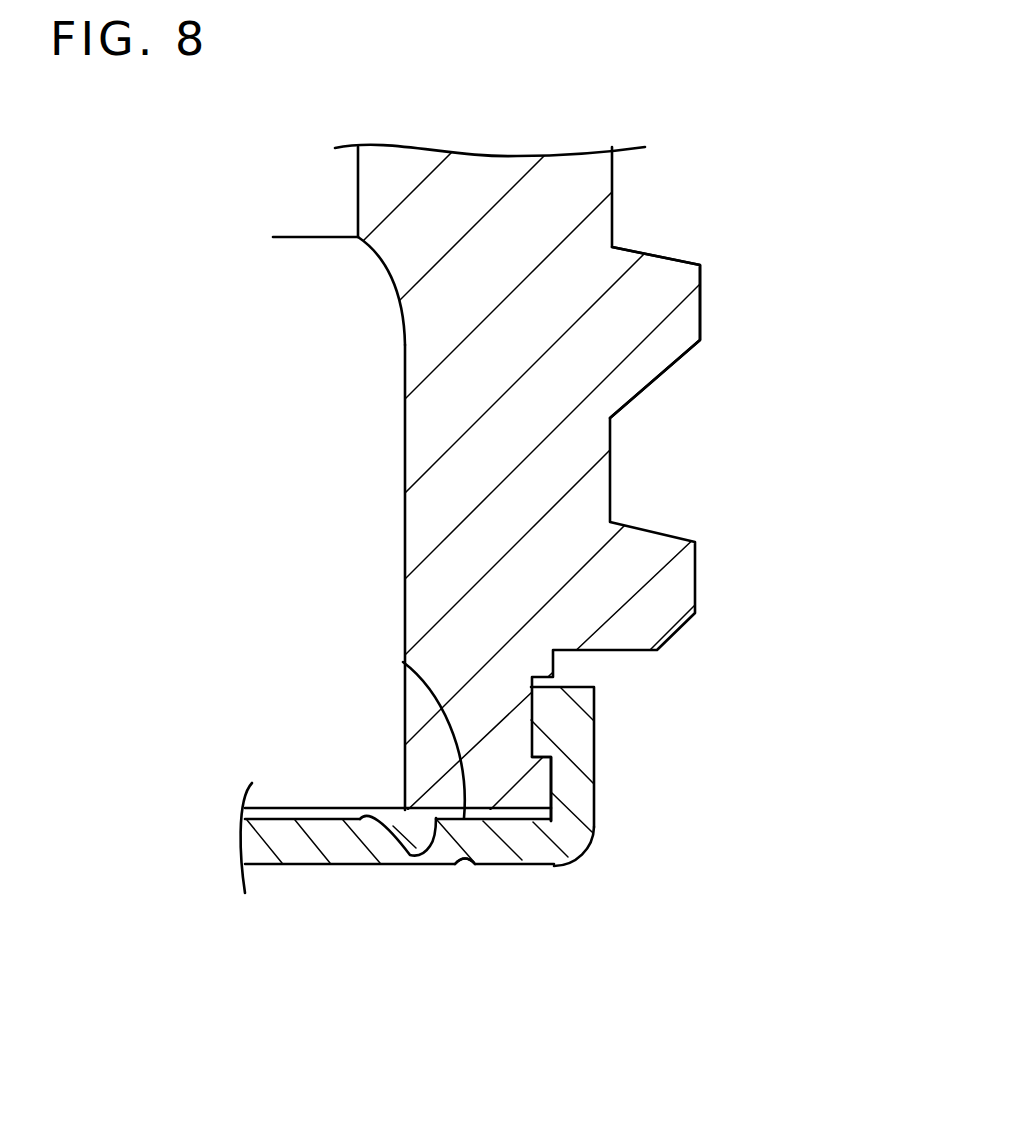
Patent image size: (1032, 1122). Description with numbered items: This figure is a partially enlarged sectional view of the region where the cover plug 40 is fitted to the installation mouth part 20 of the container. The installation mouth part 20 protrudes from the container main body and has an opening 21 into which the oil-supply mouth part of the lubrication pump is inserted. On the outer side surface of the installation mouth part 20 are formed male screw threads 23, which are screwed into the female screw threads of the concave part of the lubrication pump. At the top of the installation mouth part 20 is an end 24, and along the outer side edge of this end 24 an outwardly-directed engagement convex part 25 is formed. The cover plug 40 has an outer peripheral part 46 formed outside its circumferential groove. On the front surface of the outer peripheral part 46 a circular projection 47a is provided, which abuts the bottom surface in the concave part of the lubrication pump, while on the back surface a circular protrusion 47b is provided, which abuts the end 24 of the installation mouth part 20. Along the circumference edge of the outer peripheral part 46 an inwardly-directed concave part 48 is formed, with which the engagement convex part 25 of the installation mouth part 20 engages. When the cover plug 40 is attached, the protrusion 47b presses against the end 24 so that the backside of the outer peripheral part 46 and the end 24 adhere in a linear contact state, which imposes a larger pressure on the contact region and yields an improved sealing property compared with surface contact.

The installation mouth part 20 is at (545, 225).
The opening 21 is at (350, 340).
The male screw threads 23 is at (642, 313).
The end 24 is at (410, 855).
The engagement convex part 25 is at (525, 788).
The cover plug 40 is at (570, 713).
The outer peripheral part 46 is at (530, 855).
The circular projection 47a is at (465, 868).
The circular protrusion 47b is at (403, 667).
The inwardly-directed concave part 48 is at (550, 777).